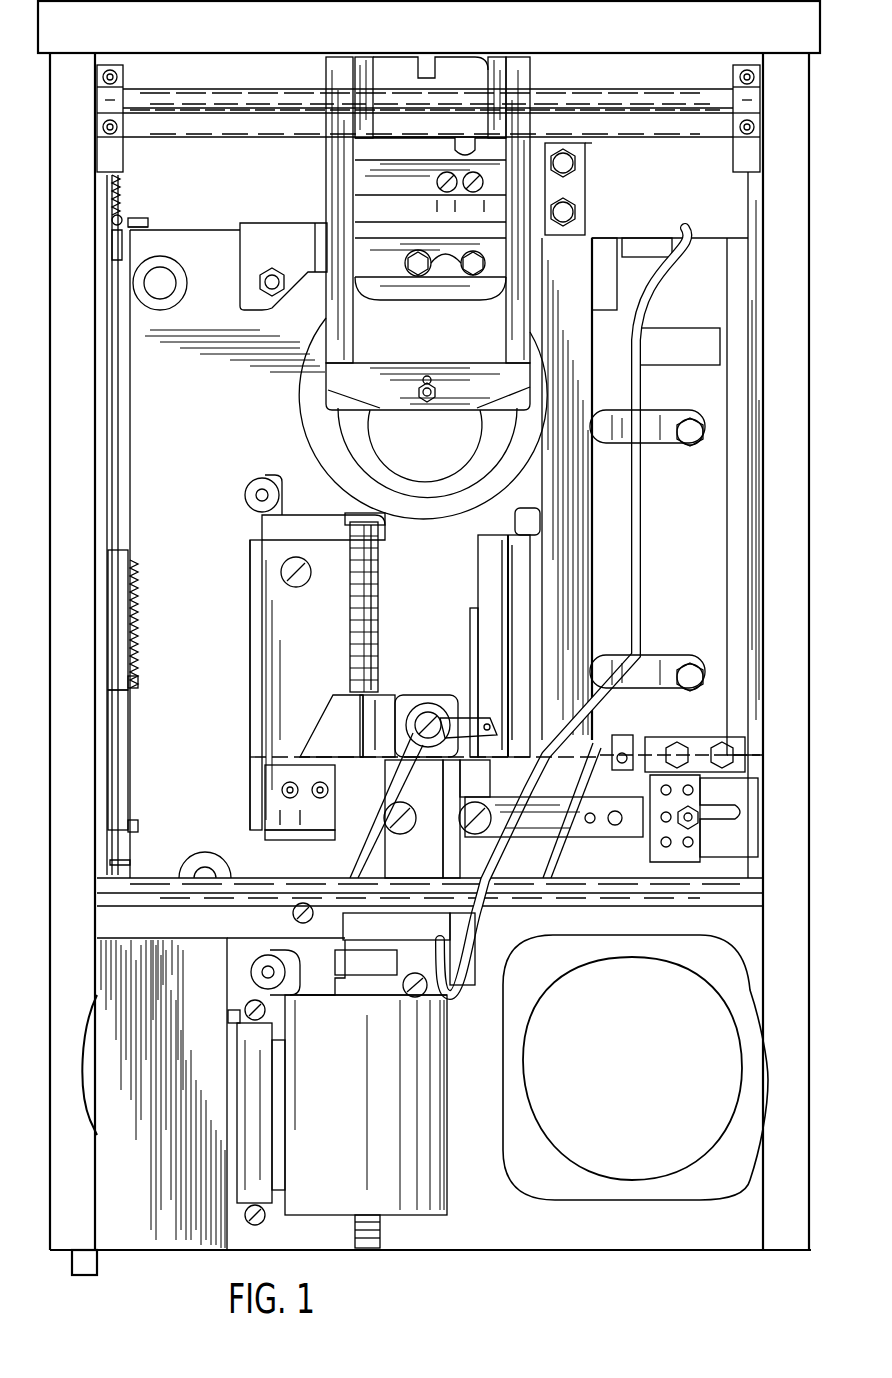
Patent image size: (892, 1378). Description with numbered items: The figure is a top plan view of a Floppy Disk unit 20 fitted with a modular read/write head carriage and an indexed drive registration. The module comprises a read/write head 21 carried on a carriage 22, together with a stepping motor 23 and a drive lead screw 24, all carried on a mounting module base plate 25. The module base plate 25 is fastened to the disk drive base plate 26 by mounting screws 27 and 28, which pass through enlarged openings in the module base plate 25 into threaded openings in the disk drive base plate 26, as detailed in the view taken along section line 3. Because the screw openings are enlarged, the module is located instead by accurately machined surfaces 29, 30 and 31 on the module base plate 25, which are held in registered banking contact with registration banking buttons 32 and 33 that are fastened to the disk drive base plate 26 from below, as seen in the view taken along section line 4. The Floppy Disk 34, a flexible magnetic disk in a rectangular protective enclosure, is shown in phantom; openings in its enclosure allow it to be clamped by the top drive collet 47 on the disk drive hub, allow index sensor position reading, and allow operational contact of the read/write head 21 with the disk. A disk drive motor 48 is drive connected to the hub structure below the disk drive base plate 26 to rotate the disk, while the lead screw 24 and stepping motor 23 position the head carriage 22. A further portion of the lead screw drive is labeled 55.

The Floppy Disk unit 20 is at (429, 651).
The read/write head 21 is at (428, 707).
The carriage 22 is at (392, 690).
The stepping motor 23 is at (455, 1190).
The drive lead screw 24 is at (378, 618).
The module base plate 25 is at (250, 640).
The disk drive base plate 26 is at (672, 1235).
The mounting screw 27 is at (250, 500).
The mounting screw 28 is at (262, 985).
The accurately machined surface 29 is at (278, 535).
The accurately machined surface 30 is at (270, 958).
The accurately machined surface 31 is at (290, 1000).
The registration banking button 32 is at (262, 478).
The registration banking button 33 is at (252, 978).
The Floppy Disk 34 is at (205, 760).
The top drive collet 47 is at (440, 510).
The disk drive motor 48 is at (568, 1190).
The rack teeth 55 is at (380, 568).
The section line 3- 3 is at (263, 560).
The section line 4- 4 is at (203, 465).